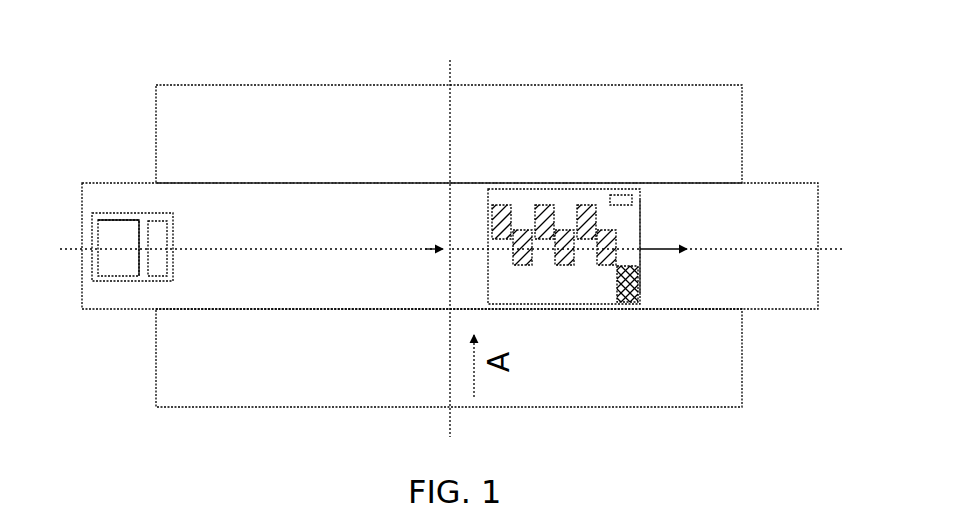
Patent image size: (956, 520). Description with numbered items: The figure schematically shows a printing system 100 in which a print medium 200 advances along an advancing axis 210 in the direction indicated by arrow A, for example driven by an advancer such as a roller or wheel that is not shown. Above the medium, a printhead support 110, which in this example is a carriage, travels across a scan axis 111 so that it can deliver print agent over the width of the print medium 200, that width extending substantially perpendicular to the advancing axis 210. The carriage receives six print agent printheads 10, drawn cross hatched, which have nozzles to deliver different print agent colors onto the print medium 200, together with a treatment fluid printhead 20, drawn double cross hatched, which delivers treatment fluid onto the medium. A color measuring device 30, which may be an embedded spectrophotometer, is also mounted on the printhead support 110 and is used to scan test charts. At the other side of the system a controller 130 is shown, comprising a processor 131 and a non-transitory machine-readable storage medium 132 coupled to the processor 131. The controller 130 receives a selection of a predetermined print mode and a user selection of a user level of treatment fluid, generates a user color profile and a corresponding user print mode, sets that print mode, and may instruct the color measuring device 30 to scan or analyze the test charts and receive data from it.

The printing system 100 is at (375, 145).
The print agent printheads 10 is at (640, 236).
The treatment fluid printhead 20 is at (640, 283).
The color measuring device 30 is at (610, 201).
The printhead support 110 is at (572, 304).
The scan axis 111 is at (797, 249).
The controller 130 is at (128, 278).
The processor 131 is at (108, 216).
The non-transitory machine-readable storage medium 132 is at (160, 217).
The print medium 200 is at (742, 93).
The advancing axis 210 is at (449, 424).